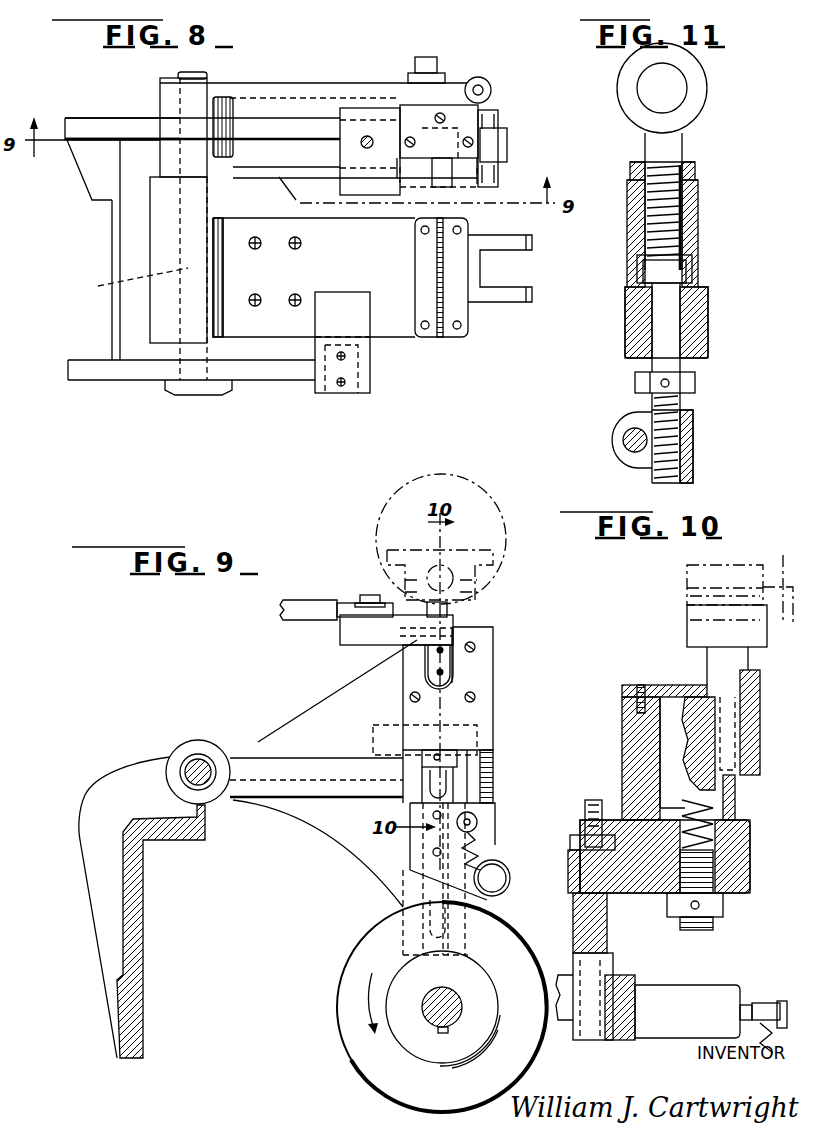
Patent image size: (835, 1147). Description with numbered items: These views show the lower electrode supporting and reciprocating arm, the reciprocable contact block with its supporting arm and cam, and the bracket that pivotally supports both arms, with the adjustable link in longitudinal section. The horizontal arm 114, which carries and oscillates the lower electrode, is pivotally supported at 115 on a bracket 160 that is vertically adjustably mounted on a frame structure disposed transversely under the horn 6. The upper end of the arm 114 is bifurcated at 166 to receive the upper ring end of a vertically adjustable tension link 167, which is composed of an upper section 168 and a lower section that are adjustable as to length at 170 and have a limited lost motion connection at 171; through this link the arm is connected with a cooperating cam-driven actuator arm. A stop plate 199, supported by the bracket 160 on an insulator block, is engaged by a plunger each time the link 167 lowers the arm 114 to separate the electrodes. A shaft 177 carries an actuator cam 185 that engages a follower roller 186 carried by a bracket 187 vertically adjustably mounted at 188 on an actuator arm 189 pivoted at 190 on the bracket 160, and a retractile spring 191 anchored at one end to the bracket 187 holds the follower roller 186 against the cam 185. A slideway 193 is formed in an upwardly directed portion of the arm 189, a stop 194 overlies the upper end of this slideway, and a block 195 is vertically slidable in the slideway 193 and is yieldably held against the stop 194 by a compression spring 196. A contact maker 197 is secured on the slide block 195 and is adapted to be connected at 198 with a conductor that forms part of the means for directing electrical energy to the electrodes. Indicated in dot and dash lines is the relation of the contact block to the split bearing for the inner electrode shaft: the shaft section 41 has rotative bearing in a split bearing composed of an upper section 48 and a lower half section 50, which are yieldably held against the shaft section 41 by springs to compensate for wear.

In FIG. 9, the horn 6 is at (483, 504).
In FIG. 9, the shaft section 41 is at (430, 566).
In FIG. 10, the shaft section 41 is at (783, 575).
In FIG. 9, the upper section of split bearing 48 is at (490, 568).
In FIG. 10, the upper section of split bearing 48 is at (697, 596).
In FIG. 9, the lower half section of split bearing 50 is at (482, 599).
In FIG. 10, the lower half section of split bearing 50 is at (697, 621).
In FIG. 8, the horizontal arm 114 is at (400, 323).
In FIG. 8, the pivot 115 is at (121, 286).
In FIG. 8, the bracket 160 is at (140, 368).
In FIG. 9, the bracket 160 is at (137, 925).
In FIG. 8, the bifurcated end 166 is at (512, 297).
In FIG. 11, the tension link 167 is at (714, 327).
In FIG. 11, the upper section of link 168 is at (693, 222).
In FIG. 11, the length adjustment 170 is at (690, 190).
In FIG. 11, the lost motion connection 171 is at (692, 260).
In FIG. 9, the shaft 177 is at (438, 1013).
In FIG. 9, the actuator cam 185 is at (356, 949).
In FIG. 8, the follower roller 186 is at (507, 141).
In FIG. 9, the follower roller 186 is at (484, 878).
In FIG. 8, the bracket 187 is at (498, 118).
In FIG. 9, the bracket 187 is at (482, 815).
In FIG. 10, the bracket 187 is at (685, 991).
In FIG. 9, the adjustable mounting 188 is at (433, 853).
In FIG. 10, the adjustable mounting 188 is at (595, 995).
In FIG. 8, the actuator arm 189 is at (310, 112).
In FIG. 9, the actuator arm 189 is at (325, 787).
In FIG. 10, the actuator arm 189 is at (735, 880).
In FIG. 8, the pivot 190 is at (165, 155).
In FIG. 9, the pivot 190 is at (200, 740).
In FIG. 9, the retractile spring 191 is at (473, 857).
In FIG. 8, the slideway 193 is at (452, 126).
In FIG. 10, the slideway 193 is at (657, 753).
In FIG. 8, the stop 194 is at (415, 112).
In FIG. 9, the stop 194 is at (468, 627).
In FIG. 10, the stop 194 is at (660, 685).
In FIG. 9, the slide block 195 is at (453, 685).
In FIG. 10, the slide block 195 is at (665, 729).
In FIG. 10, the compression spring 196 is at (705, 846).
In FIG. 8, the contact maker 197 is at (442, 173).
In FIG. 9, the contact maker 197 is at (432, 606).
In FIG. 10, the contact maker 197 is at (707, 660).
In FIG. 8, the conductor connection 198 is at (361, 143).
In FIG. 9, the conductor connection 198 is at (368, 597).
In FIG. 8, the stop plate 199 is at (358, 283).